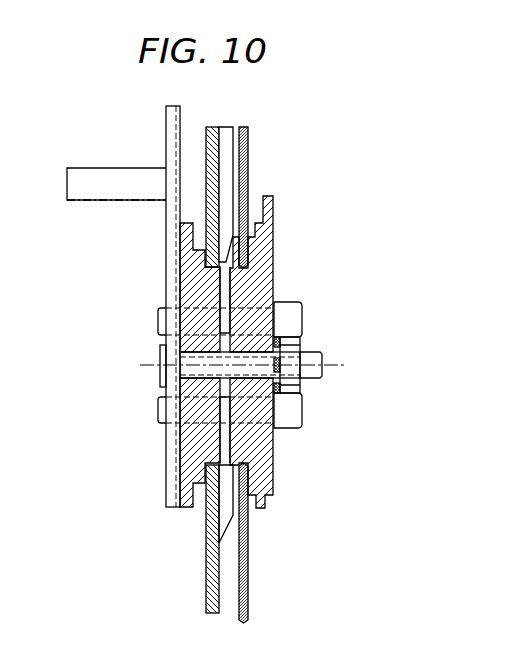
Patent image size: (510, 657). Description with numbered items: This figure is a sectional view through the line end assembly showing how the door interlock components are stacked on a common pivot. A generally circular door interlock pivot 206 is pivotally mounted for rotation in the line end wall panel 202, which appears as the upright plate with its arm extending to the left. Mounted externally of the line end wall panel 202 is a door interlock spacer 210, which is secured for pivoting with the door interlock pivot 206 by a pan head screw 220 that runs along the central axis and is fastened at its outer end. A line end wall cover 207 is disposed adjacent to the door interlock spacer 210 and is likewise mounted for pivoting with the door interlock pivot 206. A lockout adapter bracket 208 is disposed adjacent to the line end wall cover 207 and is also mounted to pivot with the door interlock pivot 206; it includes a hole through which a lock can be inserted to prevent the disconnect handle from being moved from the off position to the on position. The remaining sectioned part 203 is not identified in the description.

The line end wall panel 202 is at (248, 175).
The tapered shaft 203 is at (206, 163).
The door interlock pivot 206 is at (178, 487).
The line end wall cover 207 is at (260, 510).
The lockout adapter bracket 208 is at (273, 268).
The door interlock spacer 210 is at (228, 268).
The pan head screw 220 is at (298, 350).